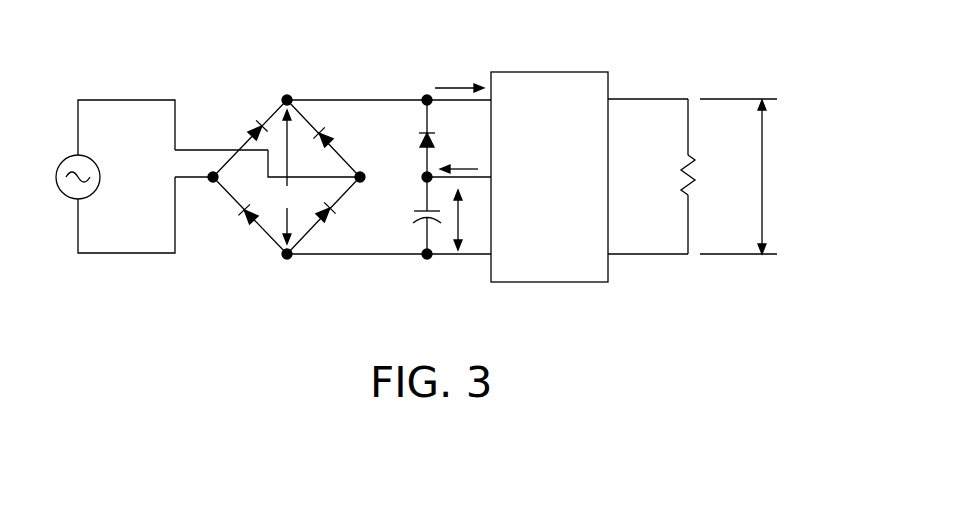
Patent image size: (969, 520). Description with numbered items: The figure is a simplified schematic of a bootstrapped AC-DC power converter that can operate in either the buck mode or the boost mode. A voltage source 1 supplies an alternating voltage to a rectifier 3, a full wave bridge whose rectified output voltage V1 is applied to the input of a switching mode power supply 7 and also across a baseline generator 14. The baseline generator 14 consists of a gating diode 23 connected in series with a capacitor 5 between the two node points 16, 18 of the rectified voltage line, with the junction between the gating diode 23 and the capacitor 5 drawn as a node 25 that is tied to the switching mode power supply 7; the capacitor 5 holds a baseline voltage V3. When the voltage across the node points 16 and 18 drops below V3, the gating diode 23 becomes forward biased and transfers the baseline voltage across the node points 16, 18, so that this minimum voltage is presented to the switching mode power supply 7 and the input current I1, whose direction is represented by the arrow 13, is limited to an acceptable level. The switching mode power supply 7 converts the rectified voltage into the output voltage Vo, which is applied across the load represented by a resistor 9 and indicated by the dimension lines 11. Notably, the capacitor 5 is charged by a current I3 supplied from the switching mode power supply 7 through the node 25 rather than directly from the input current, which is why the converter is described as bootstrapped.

The voltage source 1 is at (101, 177).
The rectifier 3 is at (240, 112).
The capacitor 5 is at (412, 219).
The switching mode power supply 7 is at (549, 72).
The resistor 9 is at (684, 178).
The dimension lines 11 is at (785, 174).
The arrow 13 is at (466, 84).
The baseline generator 14 is at (362, 276).
The node point 16 is at (428, 95).
The node point 18 is at (427, 258).
The gating diode 23 is at (420, 138).
The capacitor node 25 is at (424, 175).